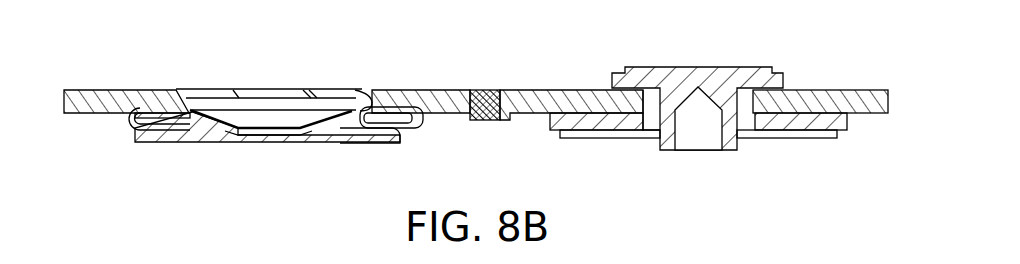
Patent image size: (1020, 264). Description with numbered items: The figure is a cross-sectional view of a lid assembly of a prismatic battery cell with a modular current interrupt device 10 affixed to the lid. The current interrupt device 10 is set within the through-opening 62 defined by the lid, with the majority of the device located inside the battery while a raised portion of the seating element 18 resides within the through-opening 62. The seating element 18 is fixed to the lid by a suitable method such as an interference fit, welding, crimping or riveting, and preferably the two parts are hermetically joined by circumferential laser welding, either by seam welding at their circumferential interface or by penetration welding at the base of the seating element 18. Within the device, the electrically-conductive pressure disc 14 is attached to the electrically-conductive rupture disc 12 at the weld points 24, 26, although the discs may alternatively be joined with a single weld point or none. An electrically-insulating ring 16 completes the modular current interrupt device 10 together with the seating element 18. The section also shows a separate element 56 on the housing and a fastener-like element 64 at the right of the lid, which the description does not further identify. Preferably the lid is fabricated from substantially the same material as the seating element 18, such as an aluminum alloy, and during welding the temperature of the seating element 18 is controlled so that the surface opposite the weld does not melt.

The modular current interrupt device 10 is at (180, 86).
The seating element 18 is at (208, 88).
The hatch tab 56 is at (236, 93).
The through-opening 62 is at (363, 93).
The electrically-conductive pressure disc 14 is at (176, 140).
The electrically-conductive rupture disc 12 is at (212, 145).
The weld point 24 is at (250, 142).
The weld point 26 is at (287, 144).
The electrically-insulating ring 16 is at (402, 144).
The fastener 64 is at (743, 63).